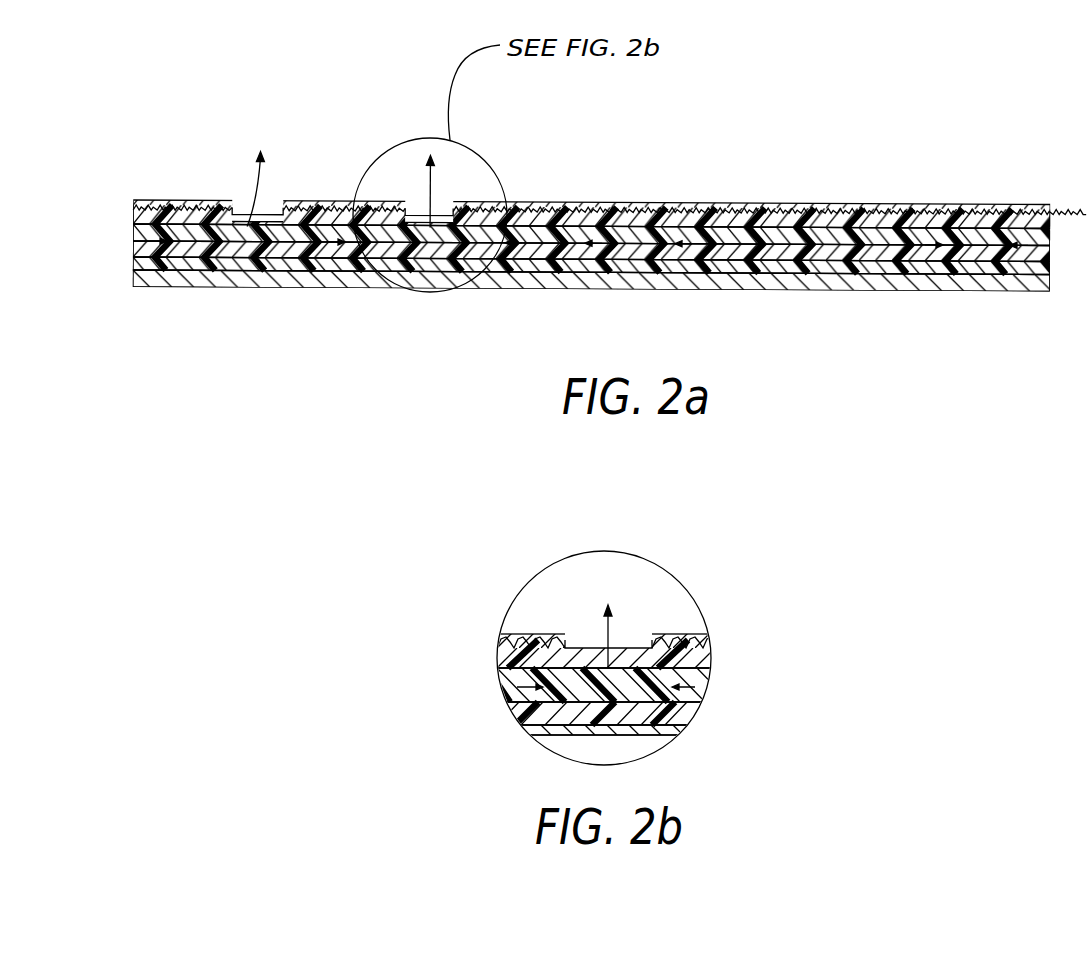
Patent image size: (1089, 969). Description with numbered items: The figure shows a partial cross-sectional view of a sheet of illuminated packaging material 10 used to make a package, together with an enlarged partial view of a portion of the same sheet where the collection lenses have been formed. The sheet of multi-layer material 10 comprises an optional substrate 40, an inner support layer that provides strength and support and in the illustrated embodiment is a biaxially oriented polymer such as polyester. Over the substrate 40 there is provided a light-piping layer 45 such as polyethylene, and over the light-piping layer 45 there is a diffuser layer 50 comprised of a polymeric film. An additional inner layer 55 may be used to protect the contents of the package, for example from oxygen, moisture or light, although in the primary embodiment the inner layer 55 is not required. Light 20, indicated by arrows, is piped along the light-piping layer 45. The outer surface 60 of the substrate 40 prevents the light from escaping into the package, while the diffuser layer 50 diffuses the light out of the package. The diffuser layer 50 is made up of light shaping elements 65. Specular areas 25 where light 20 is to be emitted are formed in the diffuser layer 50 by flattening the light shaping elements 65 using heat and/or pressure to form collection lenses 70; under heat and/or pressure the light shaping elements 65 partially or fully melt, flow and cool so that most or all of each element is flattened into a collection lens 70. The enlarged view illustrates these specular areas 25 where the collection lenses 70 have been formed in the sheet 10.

In FIG. 2A, the sheet of illuminated packaging material 10 is at (182, 293).
In FIG. 2B, the sheet of illuminated packaging material 10 is at (603, 687).
In FIG. 2A, the light 20 is at (184, 212).
In FIG. 2B, the light 20 is at (700, 697).
In FIG. 2A, the specular areas 25 is at (224, 190).
In FIG. 2B, the specular areas 25 is at (639, 624).
In FIG. 2A, the substrate 40 is at (925, 272).
In FIG. 2B, the substrate 40 is at (530, 708).
In FIG. 2A, the light-piping layer 45 is at (800, 212).
In FIG. 2B, the light-piping layer 45 is at (700, 682).
In FIG. 2A, the diffuser layer 50 is at (983, 212).
In FIG. 2B, the diffuser layer 50 is at (505, 663).
In FIG. 2A, the inner layer 55 is at (685, 273).
In FIG. 2B, the inner layer 55 is at (643, 733).
In FIG. 2A, the outer surface of the substrate 60 is at (244, 290).
In FIG. 2B, the outer surface of the substrate 60 is at (677, 717).
In FIG. 2A, the light shaping elements 65 is at (633, 207).
In FIG. 2B, the light shaping elements 65 is at (680, 650).
In FIG. 2A, the collection lenses 70 is at (247, 226).
In FIG. 2B, the collection lenses 70 is at (606, 666).